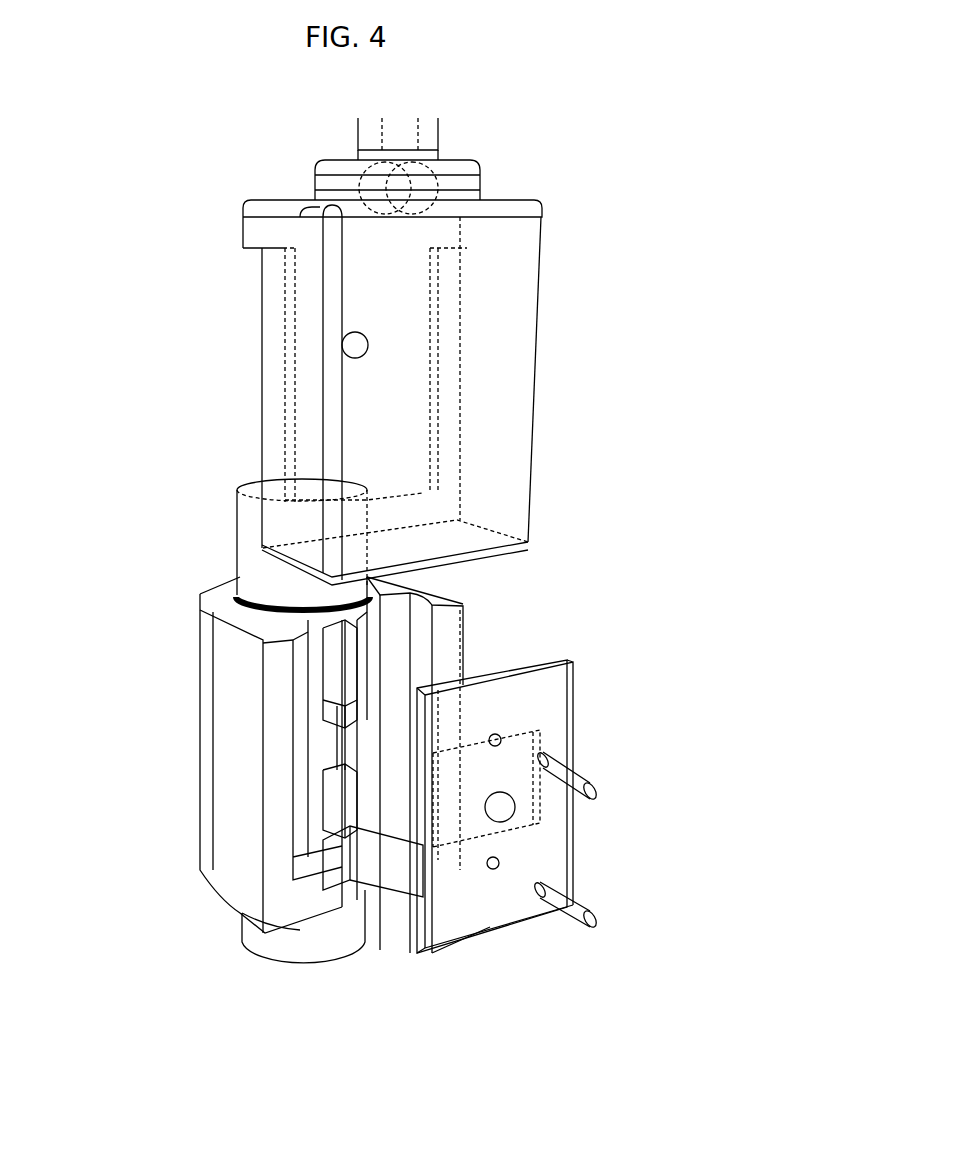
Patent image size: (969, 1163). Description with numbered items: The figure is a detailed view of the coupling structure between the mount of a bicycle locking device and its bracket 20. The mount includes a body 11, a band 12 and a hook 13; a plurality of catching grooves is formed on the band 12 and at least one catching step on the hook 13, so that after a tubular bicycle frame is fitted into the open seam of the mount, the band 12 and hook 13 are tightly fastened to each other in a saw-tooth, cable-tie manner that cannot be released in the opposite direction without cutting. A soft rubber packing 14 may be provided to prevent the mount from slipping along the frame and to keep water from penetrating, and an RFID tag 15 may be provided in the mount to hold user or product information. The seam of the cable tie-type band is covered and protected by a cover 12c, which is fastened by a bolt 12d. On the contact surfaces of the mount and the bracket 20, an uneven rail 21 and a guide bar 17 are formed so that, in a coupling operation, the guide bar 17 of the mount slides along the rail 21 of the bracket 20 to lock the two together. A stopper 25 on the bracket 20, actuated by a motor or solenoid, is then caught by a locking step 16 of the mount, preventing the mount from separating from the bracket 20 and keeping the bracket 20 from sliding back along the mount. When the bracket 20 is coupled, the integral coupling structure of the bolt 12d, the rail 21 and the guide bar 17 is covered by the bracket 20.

The bracket 20 is at (505, 325).
The rail 21 is at (292, 350).
The stopper 25 is at (360, 348).
The soft rubber packing 14 is at (237, 578).
The body 11 is at (240, 787).
The guide bar 17 is at (268, 657).
The hook 13 is at (350, 672).
The band 12 is at (333, 812).
The RFID tag 15 is at (562, 700).
The locking step 16 is at (516, 812).
The bolt 12d is at (560, 785).
The cover 12c is at (545, 878).